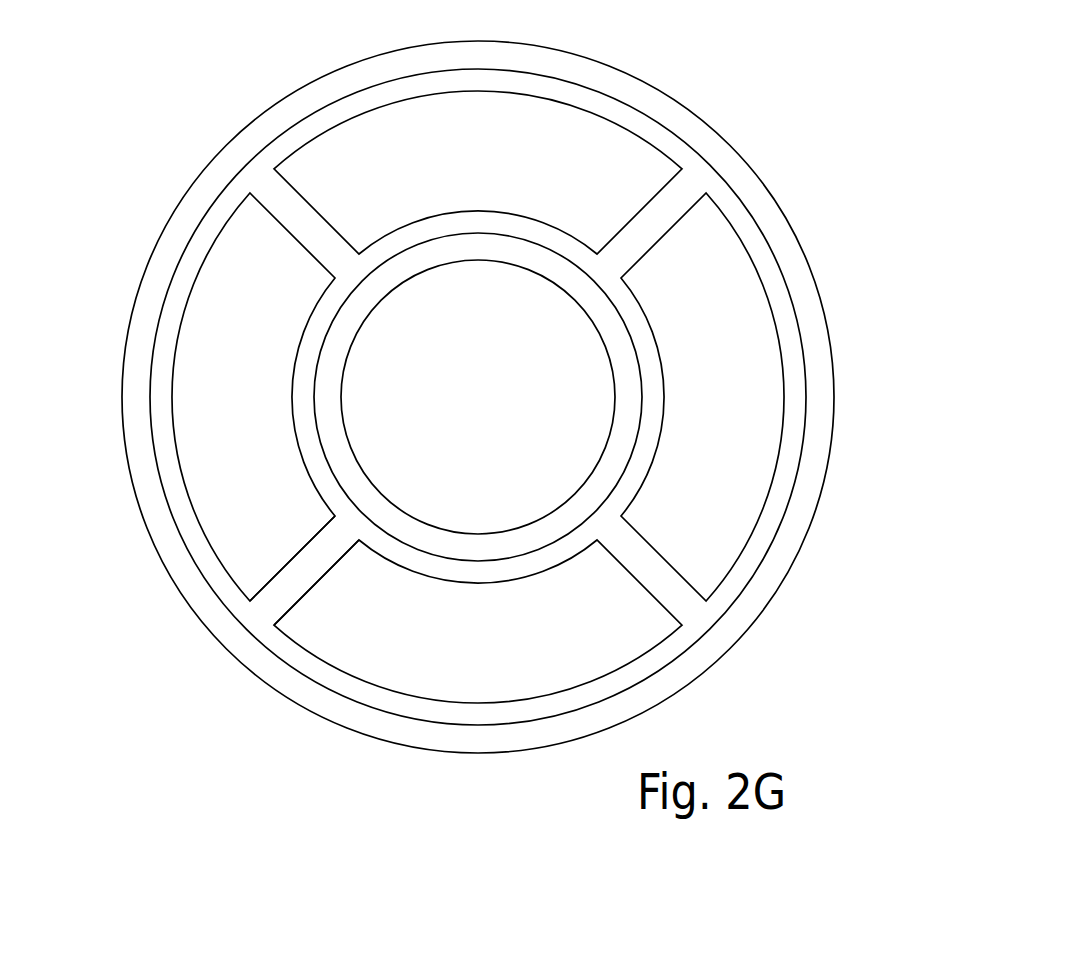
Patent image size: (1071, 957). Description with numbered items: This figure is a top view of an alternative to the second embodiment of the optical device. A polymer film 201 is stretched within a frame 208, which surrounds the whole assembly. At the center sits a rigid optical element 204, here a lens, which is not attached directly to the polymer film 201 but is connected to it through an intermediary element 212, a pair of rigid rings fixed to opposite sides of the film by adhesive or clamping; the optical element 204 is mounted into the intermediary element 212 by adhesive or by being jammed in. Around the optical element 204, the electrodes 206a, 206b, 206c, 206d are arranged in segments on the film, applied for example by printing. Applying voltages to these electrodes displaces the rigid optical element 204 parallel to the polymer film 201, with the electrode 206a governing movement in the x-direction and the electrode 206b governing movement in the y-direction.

The polymer film 201 is at (302, 553).
The rigid optical element 204 is at (516, 399).
The electrode 206a is at (697, 367).
The electrode 206b is at (225, 287).
The electrode 206c is at (572, 212).
The electrode 206d is at (358, 622).
The frame 208 is at (693, 659).
The intermediary element 212 is at (588, 310).